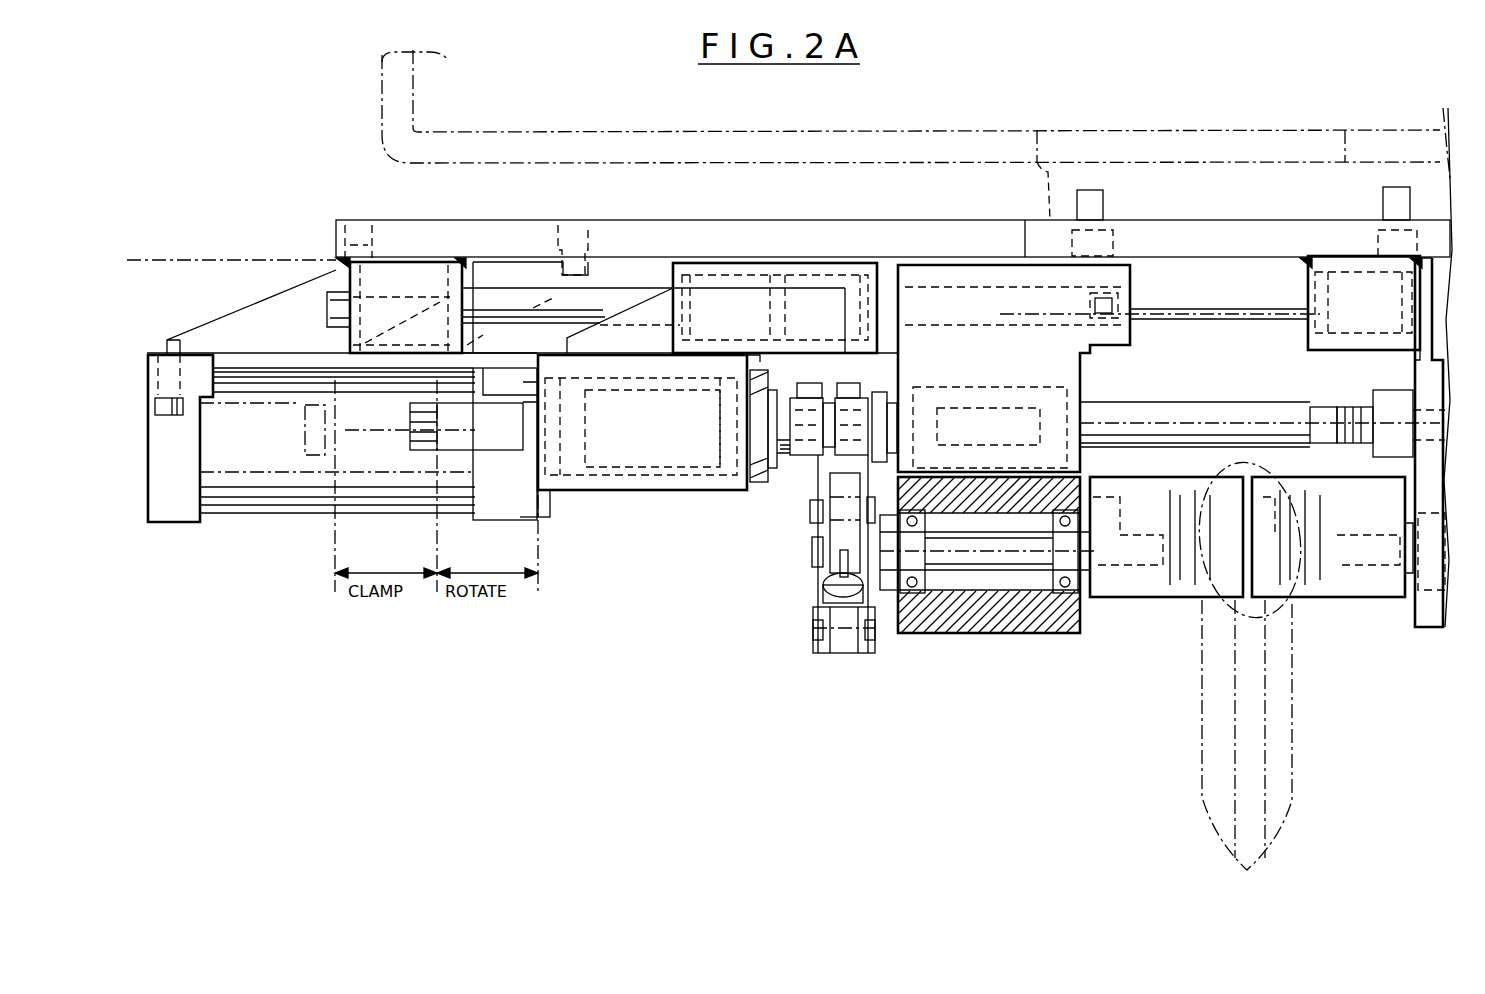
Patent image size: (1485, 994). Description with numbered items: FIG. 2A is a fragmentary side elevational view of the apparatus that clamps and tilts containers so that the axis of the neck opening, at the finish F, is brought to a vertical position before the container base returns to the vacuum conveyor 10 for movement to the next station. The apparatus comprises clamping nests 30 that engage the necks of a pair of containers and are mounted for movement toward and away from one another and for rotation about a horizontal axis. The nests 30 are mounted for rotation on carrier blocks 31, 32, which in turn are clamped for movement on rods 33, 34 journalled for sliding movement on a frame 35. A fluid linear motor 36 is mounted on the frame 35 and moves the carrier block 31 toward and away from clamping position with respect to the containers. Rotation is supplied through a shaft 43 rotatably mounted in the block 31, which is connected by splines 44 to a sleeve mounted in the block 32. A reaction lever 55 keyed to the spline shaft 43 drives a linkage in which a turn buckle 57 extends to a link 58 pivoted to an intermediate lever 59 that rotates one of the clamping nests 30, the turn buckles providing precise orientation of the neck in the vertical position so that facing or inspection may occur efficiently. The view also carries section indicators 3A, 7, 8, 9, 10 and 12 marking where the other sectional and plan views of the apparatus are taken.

The clamping nest 30 is at (1137, 590).
The carrier block 31 is at (1005, 625).
The carrier block 32 is at (1430, 622).
The rod 33 is at (1230, 315).
The rod 34 is at (1165, 410).
The frame 35 is at (882, 232).
The fluid linear motor 36 is at (283, 503).
The shaft 43 is at (987, 392).
The splines 44 is at (1352, 405).
The reaction lever 55 is at (820, 478).
The turn buckle 57 is at (812, 587).
The link 58 is at (845, 653).
The intermediate lever 59 is at (832, 653).
The finish F is at (1254, 535).
The section line 3A is at (137, 258).
The section line 7 is at (1320, 382).
The section line 8 is at (1155, 257).
The section line 9 is at (788, 257).
The vacuum conveyor 10 is at (374, 397).
The section line 12 is at (456, 170).